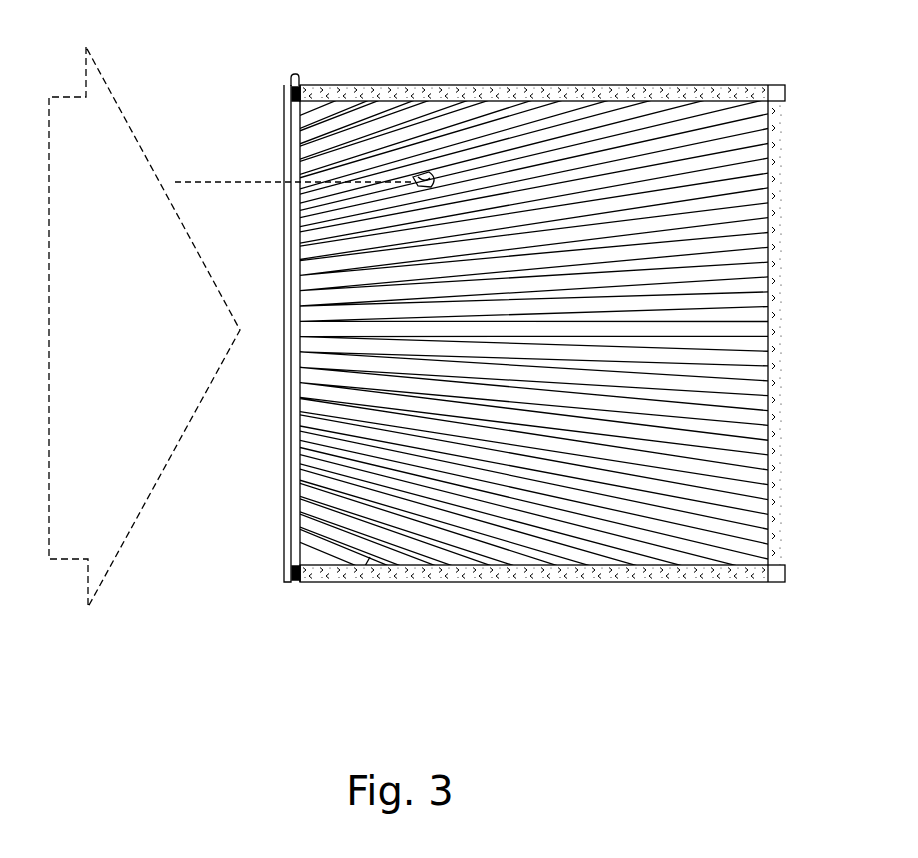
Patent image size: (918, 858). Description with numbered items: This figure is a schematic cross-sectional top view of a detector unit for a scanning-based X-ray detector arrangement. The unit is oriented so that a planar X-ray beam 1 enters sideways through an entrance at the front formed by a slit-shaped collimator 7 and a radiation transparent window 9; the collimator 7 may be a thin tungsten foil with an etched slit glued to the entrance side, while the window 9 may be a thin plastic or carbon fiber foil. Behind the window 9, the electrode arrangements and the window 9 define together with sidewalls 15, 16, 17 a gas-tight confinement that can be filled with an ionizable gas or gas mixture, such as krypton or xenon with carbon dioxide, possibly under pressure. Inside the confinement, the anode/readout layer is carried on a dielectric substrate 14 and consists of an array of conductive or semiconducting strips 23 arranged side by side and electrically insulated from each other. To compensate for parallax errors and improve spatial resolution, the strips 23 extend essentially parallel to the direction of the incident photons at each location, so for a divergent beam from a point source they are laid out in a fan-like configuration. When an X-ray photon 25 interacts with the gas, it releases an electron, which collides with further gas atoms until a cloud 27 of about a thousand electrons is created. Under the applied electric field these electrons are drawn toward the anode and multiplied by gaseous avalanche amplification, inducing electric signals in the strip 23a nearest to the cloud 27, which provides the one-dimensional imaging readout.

The planar X-ray beam 1 is at (107, 89).
The slit-shaped collimator 7 is at (289, 78).
The radiation transparent window 9 is at (284, 140).
The dielectric substrate 14 is at (313, 567).
The sidewall 15 is at (787, 532).
The sidewall 16 is at (582, 85).
The sidewall 17 is at (452, 583).
The anode/readout strips 23 is at (399, 556).
The anode/readout strip nearest to the cloud 23a is at (628, 132).
The X-ray photon 25 is at (262, 184).
The electron cloud 27 is at (441, 175).